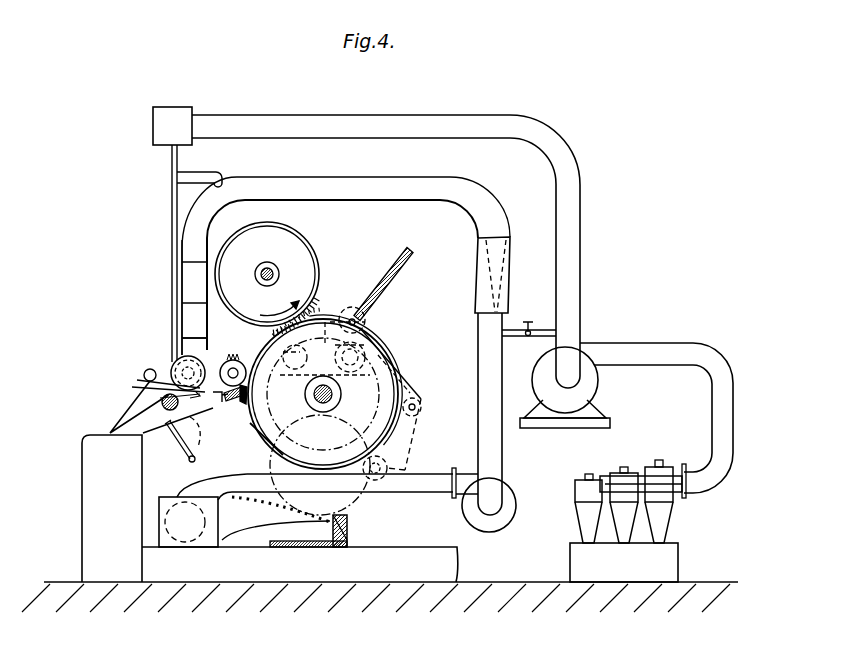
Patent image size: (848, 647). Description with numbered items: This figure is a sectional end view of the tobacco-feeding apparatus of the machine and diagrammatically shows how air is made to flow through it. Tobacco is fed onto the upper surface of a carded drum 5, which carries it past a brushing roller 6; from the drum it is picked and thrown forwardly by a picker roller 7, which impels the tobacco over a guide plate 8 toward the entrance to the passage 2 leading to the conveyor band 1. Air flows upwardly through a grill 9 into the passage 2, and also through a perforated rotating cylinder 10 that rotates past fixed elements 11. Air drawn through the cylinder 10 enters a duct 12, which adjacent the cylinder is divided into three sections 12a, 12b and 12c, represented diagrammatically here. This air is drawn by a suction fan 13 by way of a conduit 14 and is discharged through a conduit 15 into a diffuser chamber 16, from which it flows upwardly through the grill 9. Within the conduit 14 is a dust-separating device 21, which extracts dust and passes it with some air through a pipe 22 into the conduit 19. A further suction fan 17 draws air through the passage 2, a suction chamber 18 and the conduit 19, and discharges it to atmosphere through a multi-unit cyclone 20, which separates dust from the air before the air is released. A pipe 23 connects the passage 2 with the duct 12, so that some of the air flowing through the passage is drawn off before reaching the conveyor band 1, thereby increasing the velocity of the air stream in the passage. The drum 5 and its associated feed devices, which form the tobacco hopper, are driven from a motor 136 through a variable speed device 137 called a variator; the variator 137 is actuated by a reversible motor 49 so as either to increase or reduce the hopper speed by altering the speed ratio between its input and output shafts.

The conveyor band 1 is at (172, 160).
The passage 2 is at (170, 284).
The carded drum 5 is at (313, 320).
The brushing roller 6 is at (300, 230).
The picker roller 7 is at (236, 362).
The guide plate 8 is at (229, 404).
The grill 9 is at (193, 413).
The perforated rotating cylinder 10 is at (185, 352).
The fixed elements 11 is at (148, 380).
The duct 12 is at (190, 246).
The duct section 12a is at (197, 275).
The duct section 12b is at (193, 310).
The duct section 12c is at (200, 342).
The suction fan 13 is at (513, 503).
The conduit 14 is at (442, 192).
The conduit 15 is at (438, 488).
The diffuser chamber 16 is at (253, 525).
The suction fan 17 is at (583, 390).
The suction chamber 18 is at (170, 115).
The conduit 19 is at (570, 255).
The multi-unit cyclone 20 is at (684, 530).
The dust-separating device 21 is at (482, 275).
The pipe 22 is at (535, 327).
The pipe 23 is at (197, 172).
The reversible motor 49 is at (353, 312).
The motor 136 is at (318, 368).
The variable speed device 137 is at (372, 330).